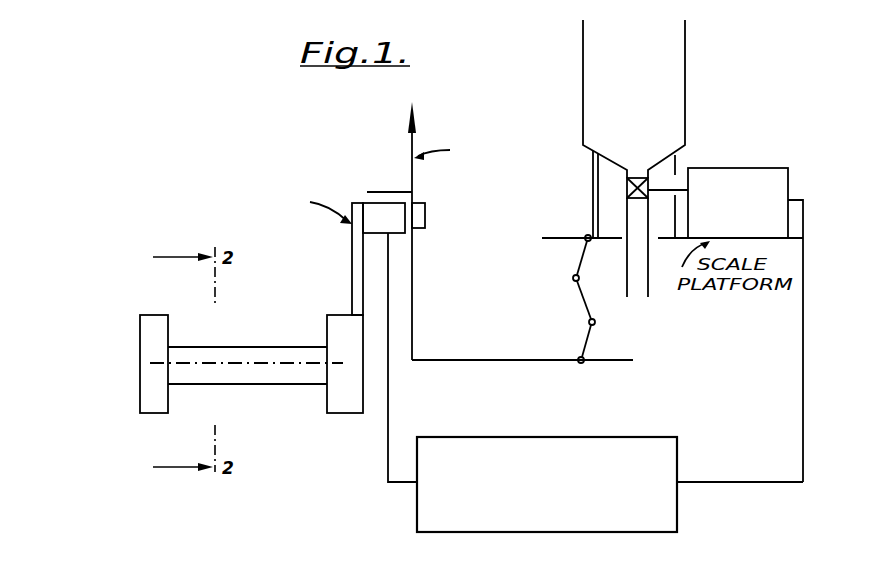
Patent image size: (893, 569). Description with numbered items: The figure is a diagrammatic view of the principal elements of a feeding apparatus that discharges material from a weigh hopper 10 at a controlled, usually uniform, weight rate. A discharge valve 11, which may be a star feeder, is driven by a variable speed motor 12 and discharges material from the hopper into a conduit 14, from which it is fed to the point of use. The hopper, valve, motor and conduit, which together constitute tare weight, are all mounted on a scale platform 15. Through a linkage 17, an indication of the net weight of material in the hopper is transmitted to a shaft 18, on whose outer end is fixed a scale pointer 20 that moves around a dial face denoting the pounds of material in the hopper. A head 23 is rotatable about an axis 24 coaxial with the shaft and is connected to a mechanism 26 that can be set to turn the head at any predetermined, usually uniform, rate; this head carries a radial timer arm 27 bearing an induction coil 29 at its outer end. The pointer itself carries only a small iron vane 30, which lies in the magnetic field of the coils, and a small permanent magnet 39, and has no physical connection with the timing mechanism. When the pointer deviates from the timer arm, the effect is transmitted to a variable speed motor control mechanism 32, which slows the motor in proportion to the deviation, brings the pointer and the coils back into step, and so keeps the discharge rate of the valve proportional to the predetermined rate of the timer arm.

The weigh hopper 10 is at (687, 88).
The discharge valve 11 is at (644, 176).
The variable speed motor 12 is at (763, 168).
The conduit 14 is at (627, 272).
The scale platform 15 is at (573, 240).
The linkage 17 is at (574, 302).
The shaft 18 is at (505, 362).
The scale pointer 20 is at (408, 142).
The head 23 is at (327, 402).
The axis 24 is at (235, 362).
The mechanism 26 is at (158, 413).
The timer arm 27 is at (352, 267).
The induction coil 29 is at (370, 202).
The iron vane 30 is at (398, 180).
The variable speed motor control mechanism 32 is at (497, 533).
The permanent magnet 39 is at (425, 212).